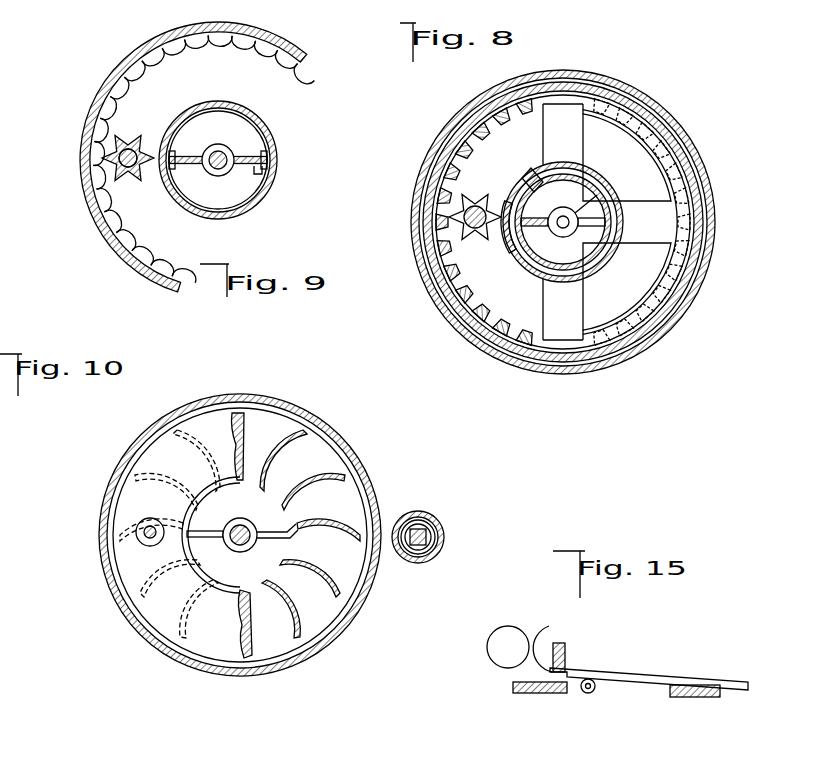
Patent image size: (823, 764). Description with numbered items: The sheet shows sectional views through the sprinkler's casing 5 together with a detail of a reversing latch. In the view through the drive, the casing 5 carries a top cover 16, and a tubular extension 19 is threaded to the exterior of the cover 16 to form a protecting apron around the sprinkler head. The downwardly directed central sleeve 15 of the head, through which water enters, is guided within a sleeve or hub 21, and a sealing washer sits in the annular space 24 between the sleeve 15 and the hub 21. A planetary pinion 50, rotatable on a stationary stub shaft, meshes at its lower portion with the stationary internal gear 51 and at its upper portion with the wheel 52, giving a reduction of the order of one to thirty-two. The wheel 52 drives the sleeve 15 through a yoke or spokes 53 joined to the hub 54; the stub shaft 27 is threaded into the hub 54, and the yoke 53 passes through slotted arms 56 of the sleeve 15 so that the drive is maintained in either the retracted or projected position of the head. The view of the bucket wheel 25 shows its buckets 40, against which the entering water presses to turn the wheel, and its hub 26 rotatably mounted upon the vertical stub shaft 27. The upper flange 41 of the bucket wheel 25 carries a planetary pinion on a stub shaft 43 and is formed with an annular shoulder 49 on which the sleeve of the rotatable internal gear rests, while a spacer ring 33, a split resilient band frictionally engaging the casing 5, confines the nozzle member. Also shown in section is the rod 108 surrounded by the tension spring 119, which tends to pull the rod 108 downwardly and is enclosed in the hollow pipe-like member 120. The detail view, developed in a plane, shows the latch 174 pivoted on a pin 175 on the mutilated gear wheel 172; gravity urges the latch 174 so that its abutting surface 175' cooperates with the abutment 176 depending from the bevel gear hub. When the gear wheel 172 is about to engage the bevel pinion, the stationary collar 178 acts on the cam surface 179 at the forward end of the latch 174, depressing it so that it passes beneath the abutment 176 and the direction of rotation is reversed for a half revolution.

In FIG. 9, the casing 5 is at (80, 135).
In FIG. 10, the casing 5 is at (112, 580).
In FIG. 9, the stationary internal gear 51 is at (306, 72).
In FIG. 9, the planetary pinion 50 is at (133, 132).
In FIG. 8, the planetary pinion 50 is at (452, 242).
In FIG. 9, the sleeve or hub 21 is at (253, 142).
In FIG. 8, the sleeve or hub 21 is at (512, 193).
In FIG. 9, the slotted arms 56 is at (186, 133).
In FIG. 8, the slotted arms 56 is at (533, 176).
In FIG. 9, the yoke or spokes 53 is at (278, 173).
In FIG. 8, the yoke or spokes 53 is at (522, 250).
In FIG. 9, the hub 54 is at (211, 178).
In FIG. 8, the hub 54 is at (578, 211).
In FIG. 9, the stub shaft 27 is at (230, 155).
In FIG. 8, the stub shaft 27 is at (570, 229).
In FIG. 10, the stub shaft 27 is at (228, 518).
In FIG. 8, the tubular extension 19 is at (694, 148).
In FIG. 8, the top cover 16 is at (690, 184).
In FIG. 8, the wheel 52 is at (673, 231).
In FIG. 8, the annular space 24 is at (588, 176).
In FIG. 8, the central sleeve 15 is at (553, 188).
In FIG. 10, the bucket wheel 25 is at (140, 498).
In FIG. 10, the upper flange 41 is at (120, 483).
In FIG. 10, the spacer ring 33 is at (136, 532).
In FIG. 10, the stub shaft 43 is at (144, 534).
In FIG. 10, the annular shoulder 49 is at (190, 562).
In FIG. 10, the hub 26 is at (227, 551).
In FIG. 10, the buckets 40 is at (330, 483).
In FIG. 10, the rod 108 is at (438, 535).
In FIG. 10, the tension spring 119 is at (445, 543).
In FIG. 10, the hollow pipe-like member 120 is at (400, 558).
In FIG. 15, the stationary collar 178 is at (487, 656).
In FIG. 15, the cam surface 179 is at (540, 640).
In FIG. 15, the abutment 176 is at (566, 651).
In FIG. 15, the latch 174 is at (648, 668).
In FIG. 15, the pin 175 is at (609, 711).
In FIG. 15, the abutting surface 175' is at (554, 705).
In FIG. 15, the gear wheel 172 is at (693, 699).